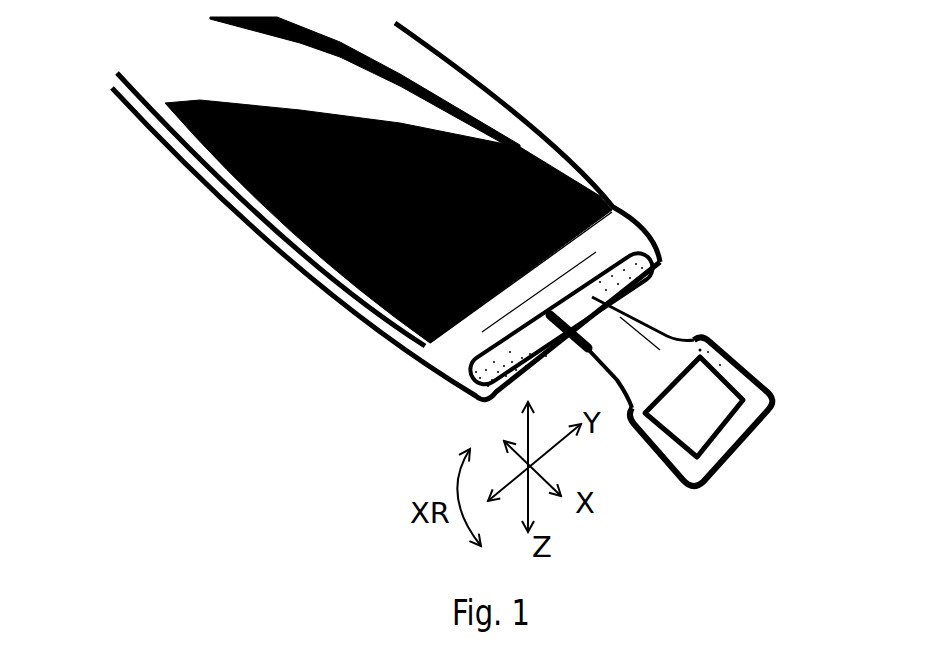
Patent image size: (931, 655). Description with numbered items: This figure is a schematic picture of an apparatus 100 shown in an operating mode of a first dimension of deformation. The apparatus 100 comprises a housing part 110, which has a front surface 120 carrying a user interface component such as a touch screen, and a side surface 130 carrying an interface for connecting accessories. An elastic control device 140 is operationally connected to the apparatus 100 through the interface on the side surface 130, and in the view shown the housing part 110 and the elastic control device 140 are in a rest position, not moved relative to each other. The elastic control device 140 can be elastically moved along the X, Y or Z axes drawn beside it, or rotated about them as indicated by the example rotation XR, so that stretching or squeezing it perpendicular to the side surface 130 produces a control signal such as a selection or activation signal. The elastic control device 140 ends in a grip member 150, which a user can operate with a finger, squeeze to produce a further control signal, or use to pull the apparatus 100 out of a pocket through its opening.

The apparatus 100 is at (123, 166).
The housing part 110 is at (627, 212).
The front surface 120 is at (430, 68).
The side surface 130 is at (660, 268).
The elastic control device 140 is at (700, 338).
The grip member 150 is at (718, 402).